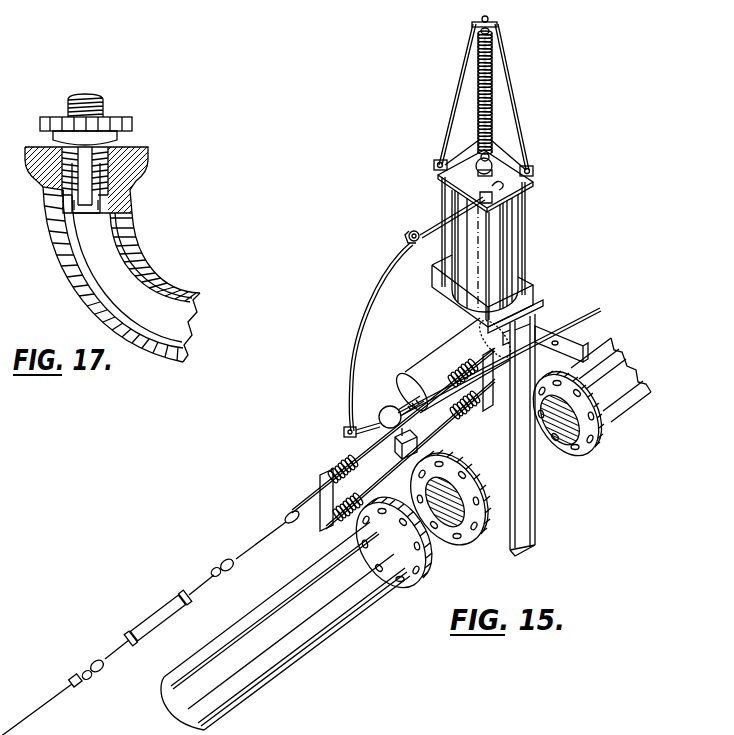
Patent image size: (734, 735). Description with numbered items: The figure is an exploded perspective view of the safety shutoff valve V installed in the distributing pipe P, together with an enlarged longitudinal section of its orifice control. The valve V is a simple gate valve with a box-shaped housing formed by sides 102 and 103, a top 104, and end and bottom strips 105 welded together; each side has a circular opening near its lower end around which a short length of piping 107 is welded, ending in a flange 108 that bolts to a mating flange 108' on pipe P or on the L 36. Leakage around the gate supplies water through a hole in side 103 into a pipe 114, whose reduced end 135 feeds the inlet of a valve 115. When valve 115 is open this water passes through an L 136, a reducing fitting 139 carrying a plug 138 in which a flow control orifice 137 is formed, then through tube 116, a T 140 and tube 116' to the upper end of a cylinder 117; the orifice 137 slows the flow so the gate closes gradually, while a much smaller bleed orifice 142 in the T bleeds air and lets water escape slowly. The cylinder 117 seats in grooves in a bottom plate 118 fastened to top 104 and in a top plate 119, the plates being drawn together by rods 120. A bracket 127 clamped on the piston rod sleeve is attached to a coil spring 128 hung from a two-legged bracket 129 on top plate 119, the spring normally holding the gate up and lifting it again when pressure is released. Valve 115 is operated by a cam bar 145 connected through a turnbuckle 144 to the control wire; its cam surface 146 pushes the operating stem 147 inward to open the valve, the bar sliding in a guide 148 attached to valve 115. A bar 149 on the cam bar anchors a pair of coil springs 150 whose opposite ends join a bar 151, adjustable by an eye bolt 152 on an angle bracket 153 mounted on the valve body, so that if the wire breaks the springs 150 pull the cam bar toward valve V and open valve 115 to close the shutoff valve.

In FIG. 15, the L 36 is at (628, 376).
In FIG. 15, the side 102 is at (537, 503).
In FIG. 15, the side 103 is at (516, 545).
In FIG. 15, the top 104 is at (529, 306).
In FIG. 15, the end and bottom strips 105 is at (534, 540).
In FIG. 15, the piping 107 is at (497, 537).
In FIG. 15, the flange 108 is at (488, 509).
In FIG. 15, the mating flange 108' is at (494, 492).
In FIG. 15, the pipe 114 is at (434, 360).
In FIG. 15, the valve 115 is at (397, 403).
In FIG. 15, the tube 116 is at (366, 337).
In FIG. 15, the tube 116' is at (447, 215).
In FIG. 15, the cylinder 117 is at (504, 256).
In FIG. 15, the bottom plate 118 is at (525, 290).
In FIG. 15, the top plate 119 is at (525, 184).
In FIG. 15, the rods 120 is at (526, 221).
In FIG. 15, the bracket 127 is at (458, 170).
In FIG. 15, the coil spring 128 is at (478, 90).
In FIG. 15, the two-legged bracket 129 is at (517, 145).
In FIG. 15, the reduced end 135 is at (410, 377).
In FIG. 17, the L 136 is at (173, 277).
In FIG. 15, the L 136 is at (367, 437).
In FIG. 17, the flow control orifice 137 is at (100, 211).
In FIG. 17, the plug 138 is at (87, 214).
In FIG. 17, the reducing fitting 139 is at (110, 142).
In FIG. 15, the reducing fitting 139 is at (347, 432).
In FIG. 15, the T 140 is at (406, 240).
In FIG. 15, the bleed orifice 142 is at (447, 733).
In FIG. 15, the turnbuckle 144 is at (148, 627).
In FIG. 15, the cam bar 145 is at (298, 506).
In FIG. 15, the cam surface 146 is at (403, 468).
In FIG. 15, the operating stem 147 is at (383, 447).
In FIG. 15, the guide 148 is at (403, 459).
In FIG. 15, the bar 149 is at (322, 487).
In FIG. 15, the coil springs 150 is at (442, 382).
In FIG. 15, the bar 151 is at (584, 295).
In FIG. 15, the eye bolt 152 is at (555, 333).
In FIG. 15, the angle bracket 153 is at (588, 342).
In FIG. 15, the pipe P is at (350, 607).
In FIG. 15, the safety shutoff valve V is at (570, 518).